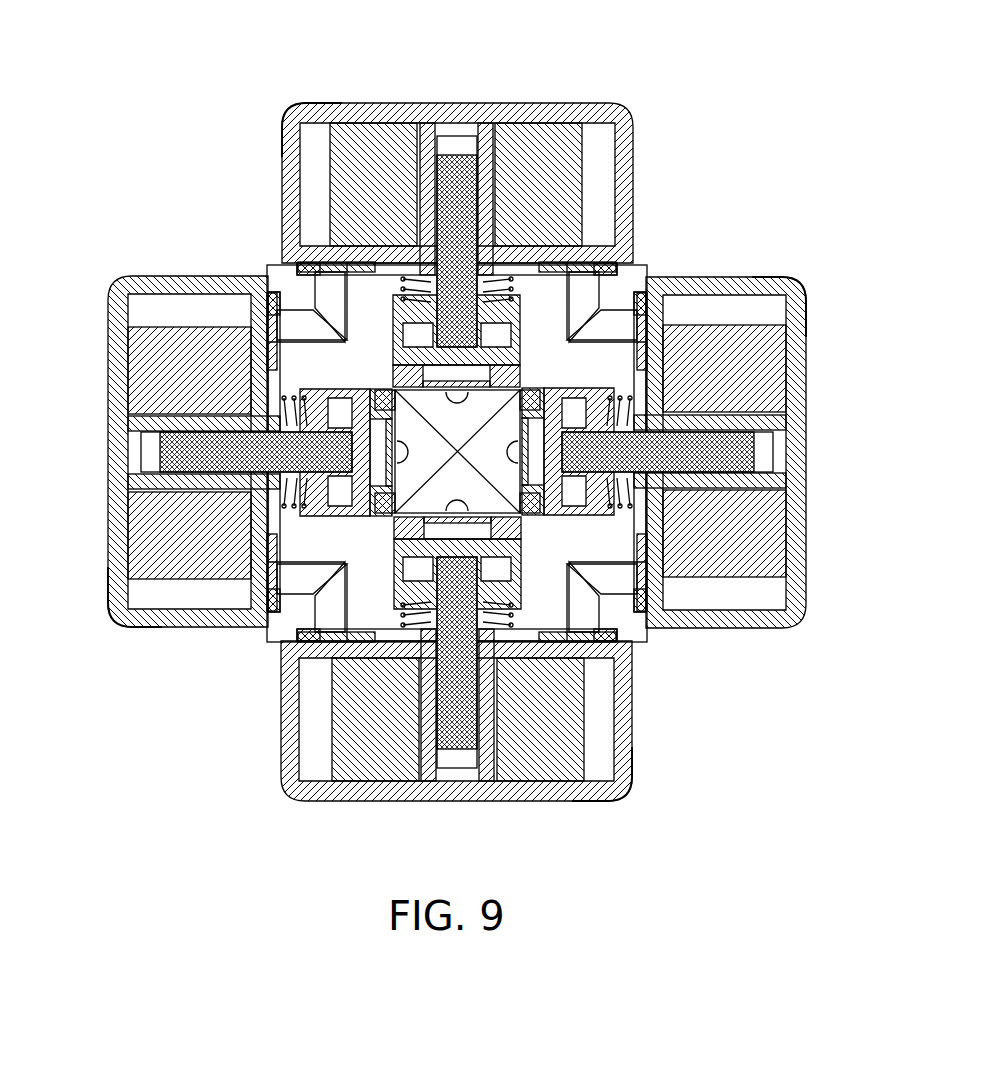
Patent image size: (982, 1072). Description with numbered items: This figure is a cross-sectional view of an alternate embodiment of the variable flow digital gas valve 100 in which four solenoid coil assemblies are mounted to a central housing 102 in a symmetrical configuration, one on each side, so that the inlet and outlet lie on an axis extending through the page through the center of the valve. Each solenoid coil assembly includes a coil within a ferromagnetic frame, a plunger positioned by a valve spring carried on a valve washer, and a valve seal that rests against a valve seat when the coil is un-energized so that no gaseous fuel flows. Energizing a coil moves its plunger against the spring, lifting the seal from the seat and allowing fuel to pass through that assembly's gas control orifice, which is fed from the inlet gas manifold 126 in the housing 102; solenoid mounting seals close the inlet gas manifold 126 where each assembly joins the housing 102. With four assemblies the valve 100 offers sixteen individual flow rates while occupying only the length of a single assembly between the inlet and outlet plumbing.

The variable flow digital gas valve 100 is at (203, 64).
The housing 102 is at (628, 600).
The inlet gas manifold 126 is at (530, 320).